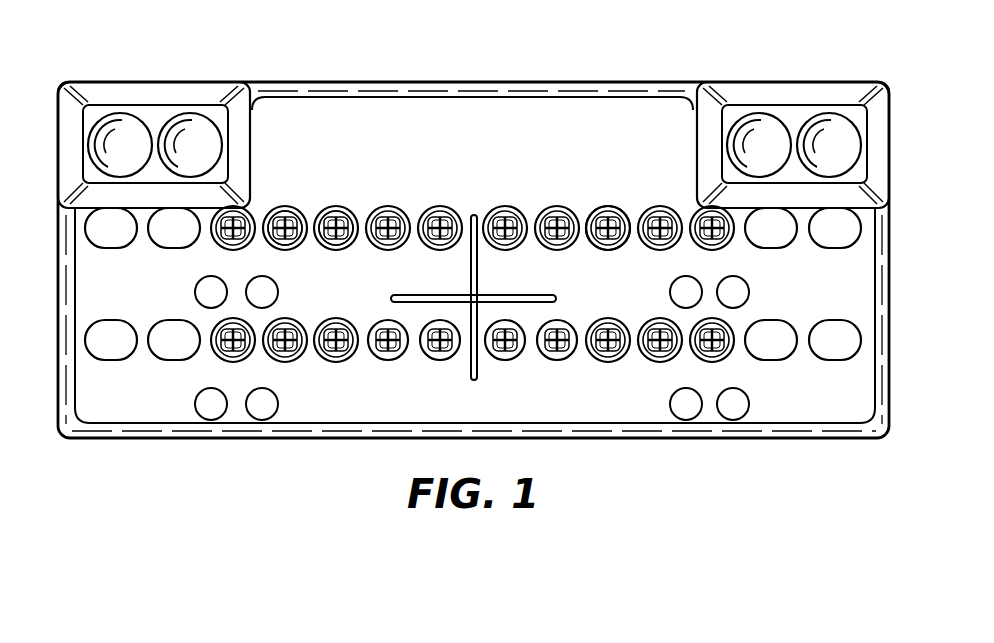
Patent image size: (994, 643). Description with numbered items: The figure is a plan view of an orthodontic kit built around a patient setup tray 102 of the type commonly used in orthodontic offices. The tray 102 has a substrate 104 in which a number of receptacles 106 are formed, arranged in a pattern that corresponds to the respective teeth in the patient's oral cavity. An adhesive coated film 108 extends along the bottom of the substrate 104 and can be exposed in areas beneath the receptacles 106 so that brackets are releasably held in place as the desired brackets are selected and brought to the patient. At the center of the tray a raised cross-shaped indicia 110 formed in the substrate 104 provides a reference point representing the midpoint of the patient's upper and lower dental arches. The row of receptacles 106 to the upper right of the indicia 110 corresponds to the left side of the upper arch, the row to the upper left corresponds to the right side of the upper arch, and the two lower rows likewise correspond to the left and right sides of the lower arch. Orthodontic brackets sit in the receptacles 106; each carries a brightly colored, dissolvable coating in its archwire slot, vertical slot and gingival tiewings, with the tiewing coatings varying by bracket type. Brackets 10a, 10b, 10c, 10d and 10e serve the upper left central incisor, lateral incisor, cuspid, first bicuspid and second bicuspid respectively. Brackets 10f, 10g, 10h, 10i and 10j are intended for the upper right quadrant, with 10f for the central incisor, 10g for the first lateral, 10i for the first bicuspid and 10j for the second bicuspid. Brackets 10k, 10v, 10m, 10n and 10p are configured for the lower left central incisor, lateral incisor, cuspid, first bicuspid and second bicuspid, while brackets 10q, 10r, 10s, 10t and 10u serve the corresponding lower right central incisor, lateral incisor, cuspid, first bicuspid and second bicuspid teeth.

The patient setup tray 102 is at (660, 78).
The substrate 104 is at (487, 108).
The receptacles 106 is at (337, 241).
The adhesive coated film 108 is at (609, 240).
The raised cross-shaped indicia 110 is at (553, 299).
The bracket 10a is at (505, 226).
The bracket 10b is at (557, 226).
The bracket 10c is at (608, 226).
The bracket 10d is at (660, 226).
The bracket 10e is at (712, 237).
The bracket 10f is at (440, 226).
The bracket 10g is at (388, 226).
The bracket 10h is at (337, 226).
The bracket 10i is at (285, 226).
The bracket 10j is at (232, 236).
The bracket 10k is at (503, 350).
The bracket 10m is at (603, 352).
The bracket 10n is at (657, 352).
The bracket 10p is at (712, 350).
The bracket 10q is at (441, 350).
The bracket 10r is at (389, 352).
The bracket 10s is at (336, 352).
The bracket 10t is at (287, 352).
The bracket 10u is at (228, 356).
The bracket 10v is at (555, 350).